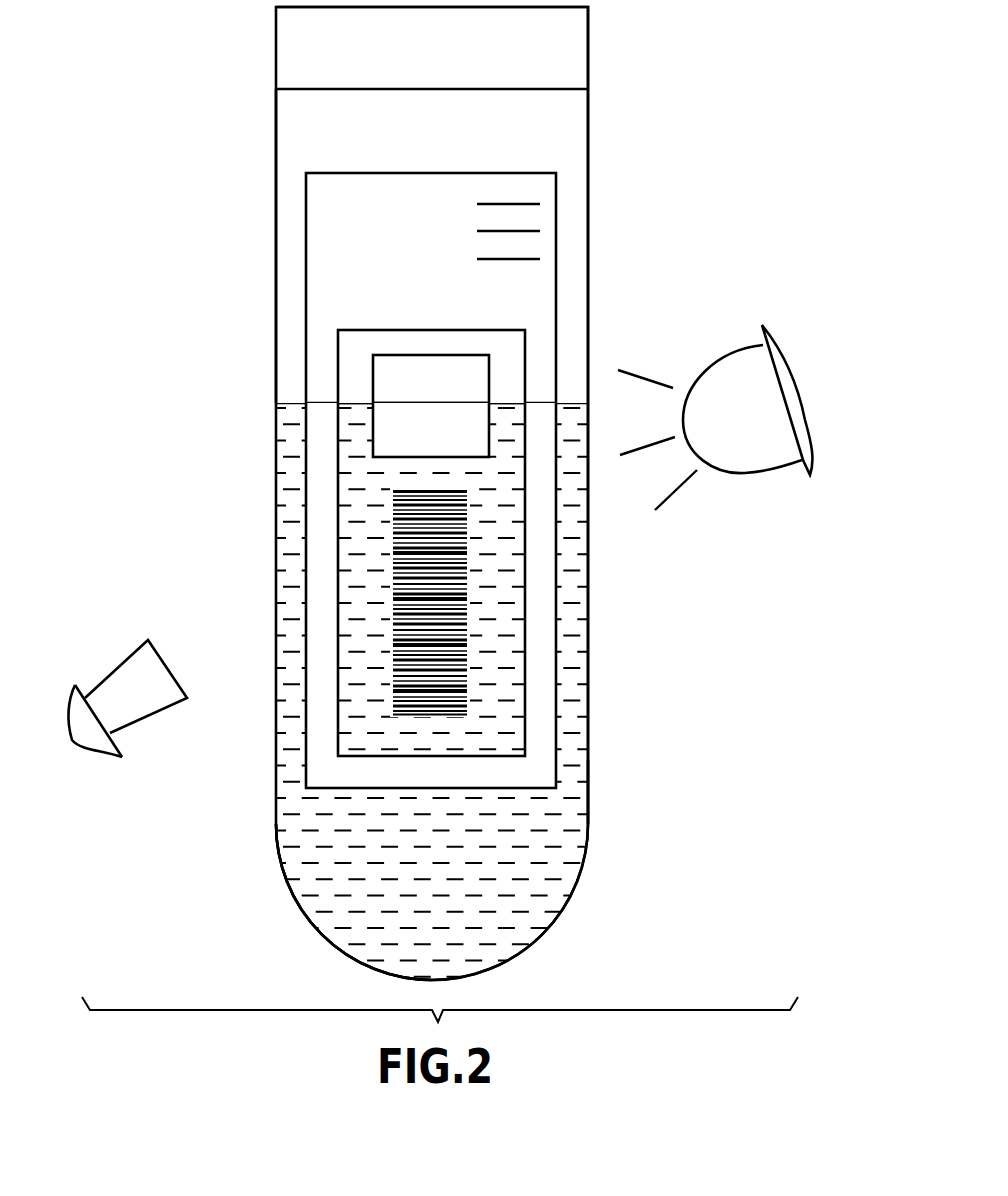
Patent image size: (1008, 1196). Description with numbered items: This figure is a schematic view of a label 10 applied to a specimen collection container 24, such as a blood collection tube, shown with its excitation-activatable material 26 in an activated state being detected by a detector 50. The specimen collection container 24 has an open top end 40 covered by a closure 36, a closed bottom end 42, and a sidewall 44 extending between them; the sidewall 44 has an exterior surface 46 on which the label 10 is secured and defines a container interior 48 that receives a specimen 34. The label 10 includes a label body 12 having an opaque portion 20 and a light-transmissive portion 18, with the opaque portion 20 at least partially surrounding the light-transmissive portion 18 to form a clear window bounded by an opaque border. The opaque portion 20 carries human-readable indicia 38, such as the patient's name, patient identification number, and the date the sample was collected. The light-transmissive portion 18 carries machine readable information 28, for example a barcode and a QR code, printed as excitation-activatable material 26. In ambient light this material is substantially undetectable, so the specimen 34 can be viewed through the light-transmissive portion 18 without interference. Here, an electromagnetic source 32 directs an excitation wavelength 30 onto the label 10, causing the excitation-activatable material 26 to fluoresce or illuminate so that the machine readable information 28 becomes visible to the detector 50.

The label 10 is at (333, 290).
The label body 12 is at (330, 342).
The light-transmissive portion 18 is at (357, 497).
The opaque portion 20 is at (517, 300).
The specimen collection container 24 is at (552, 115).
The excitation-activatable material 26 is at (378, 377).
The machine readable information 28 is at (475, 584).
The excitation wavelength 30 is at (643, 373).
The electromagnetic source 32 is at (763, 458).
The specimen 34 is at (548, 848).
The closure 36 is at (567, 37).
The human-readable indicia 38 is at (500, 192).
The open top end 40 is at (296, 89).
The closed bottom end 42 is at (490, 970).
The sidewall 44 is at (588, 795).
The exterior surface 46 is at (588, 742).
The container interior 48 is at (325, 915).
The detector 50 is at (112, 672).